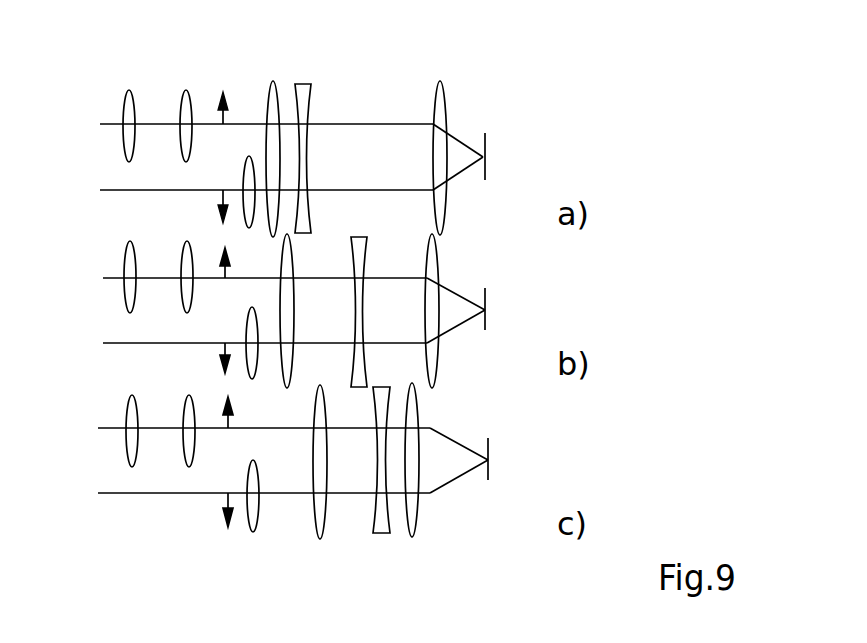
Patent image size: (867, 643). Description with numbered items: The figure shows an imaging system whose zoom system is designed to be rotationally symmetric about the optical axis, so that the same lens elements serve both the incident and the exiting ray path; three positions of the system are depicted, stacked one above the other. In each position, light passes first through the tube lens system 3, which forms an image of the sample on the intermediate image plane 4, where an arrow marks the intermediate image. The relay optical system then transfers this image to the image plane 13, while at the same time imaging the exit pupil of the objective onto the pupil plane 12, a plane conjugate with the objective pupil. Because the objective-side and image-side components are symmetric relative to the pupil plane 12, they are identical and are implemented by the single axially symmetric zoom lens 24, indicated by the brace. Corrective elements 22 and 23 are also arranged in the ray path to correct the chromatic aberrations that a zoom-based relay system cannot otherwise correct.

The tube lens system 3 is at (72, 62).
The corrective element 22 is at (187, 88).
The intermediate image plane 4 is at (228, 112).
The image plane 13 is at (220, 202).
The axially symmetric zoom lens 24 is at (270, 69).
The pupil plane 12 is at (490, 137).
The corrective element 23 is at (253, 518).